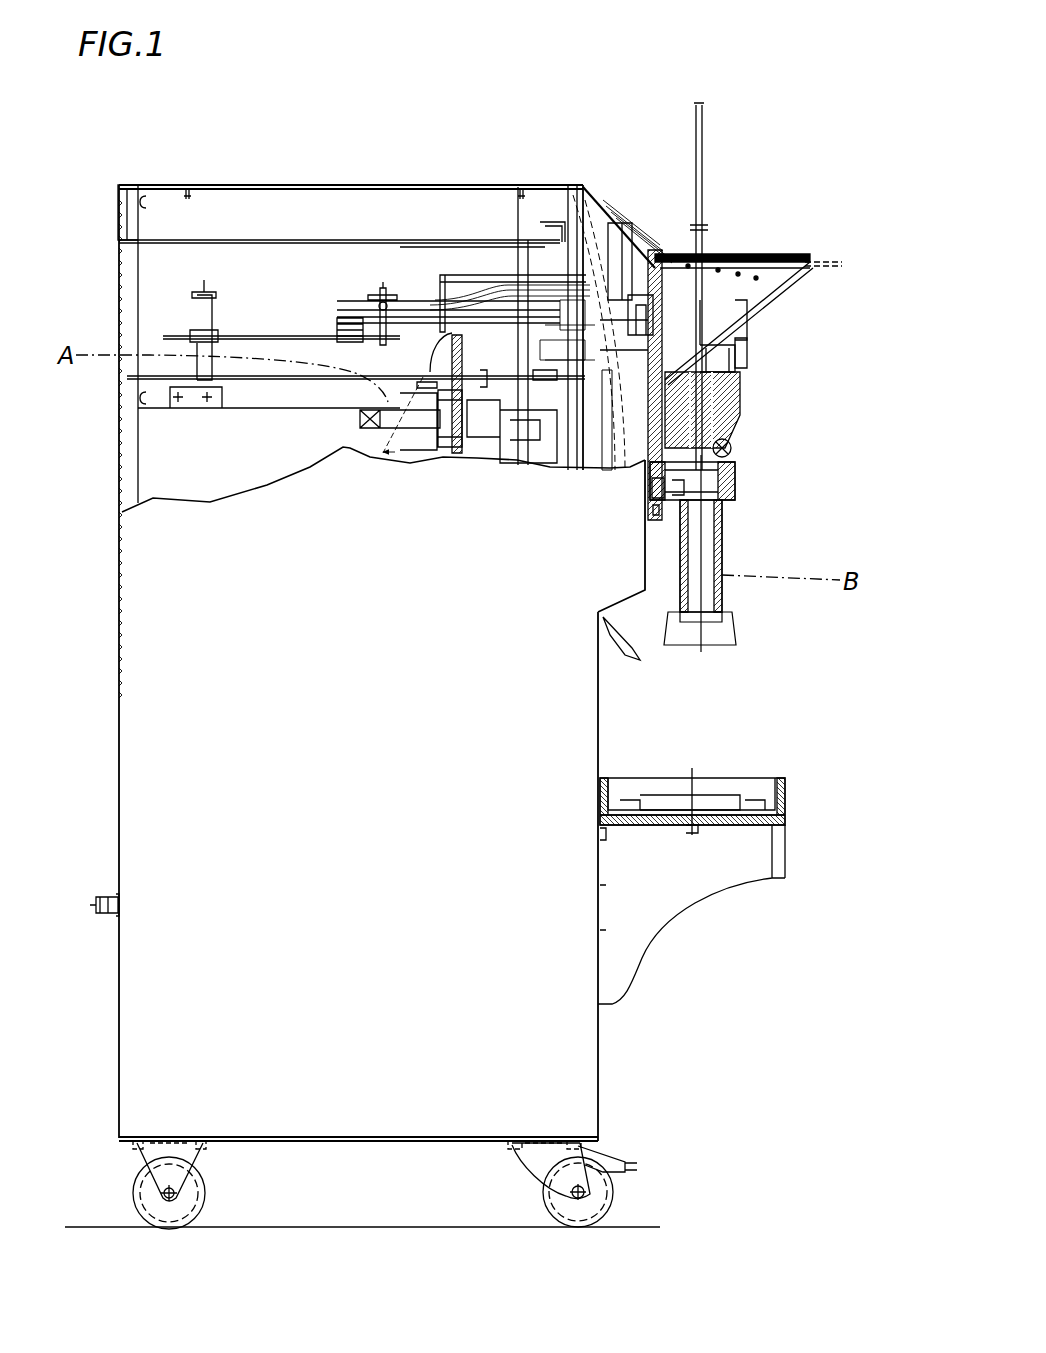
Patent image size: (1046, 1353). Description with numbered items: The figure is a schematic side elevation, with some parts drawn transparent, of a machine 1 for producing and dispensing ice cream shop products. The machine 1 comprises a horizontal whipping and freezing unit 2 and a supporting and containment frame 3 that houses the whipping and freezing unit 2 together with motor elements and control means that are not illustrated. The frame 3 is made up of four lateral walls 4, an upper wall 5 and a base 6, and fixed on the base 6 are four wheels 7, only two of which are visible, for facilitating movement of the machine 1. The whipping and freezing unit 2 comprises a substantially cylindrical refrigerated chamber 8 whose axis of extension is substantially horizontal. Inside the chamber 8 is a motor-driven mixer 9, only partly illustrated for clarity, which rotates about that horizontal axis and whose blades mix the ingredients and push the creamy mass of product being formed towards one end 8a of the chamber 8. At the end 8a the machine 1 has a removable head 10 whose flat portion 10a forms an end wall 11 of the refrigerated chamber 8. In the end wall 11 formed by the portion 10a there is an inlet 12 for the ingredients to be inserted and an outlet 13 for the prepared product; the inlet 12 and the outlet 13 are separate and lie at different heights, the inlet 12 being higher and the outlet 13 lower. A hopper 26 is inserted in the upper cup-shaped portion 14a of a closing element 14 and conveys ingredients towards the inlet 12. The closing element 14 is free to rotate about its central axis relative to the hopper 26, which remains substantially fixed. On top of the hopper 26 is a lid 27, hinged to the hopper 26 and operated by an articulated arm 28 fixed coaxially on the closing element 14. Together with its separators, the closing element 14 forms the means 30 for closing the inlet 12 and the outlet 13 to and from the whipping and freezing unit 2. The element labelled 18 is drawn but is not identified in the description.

The machine 1 is at (630, 132).
The whipping and freezing unit 2 is at (444, 362).
The supporting and containment frame 3 is at (117, 1041).
The lateral walls 4 is at (118, 524).
The upper wall 5 is at (234, 184).
The base 6 is at (345, 1146).
The wheels 7 is at (130, 1196).
The refrigerated chamber 8 is at (504, 357).
The end of the chamber 8a is at (608, 386).
The motor-driven mixer 9 is at (410, 408).
The removable head 10 is at (740, 485).
The flat portion 10a is at (648, 424).
The end wall 11 is at (645, 468).
The inlet 12 is at (722, 366).
The outlet 13 is at (660, 497).
The closing element 14 is at (738, 404).
The upper cup-shaped portion 14a is at (724, 370).
The plate 18 is at (743, 344).
The hopper 26 is at (793, 286).
The lid 27 is at (751, 252).
The articulated arm 28 is at (833, 260).
The means for closing the inlet and the outlet 30 is at (740, 447).